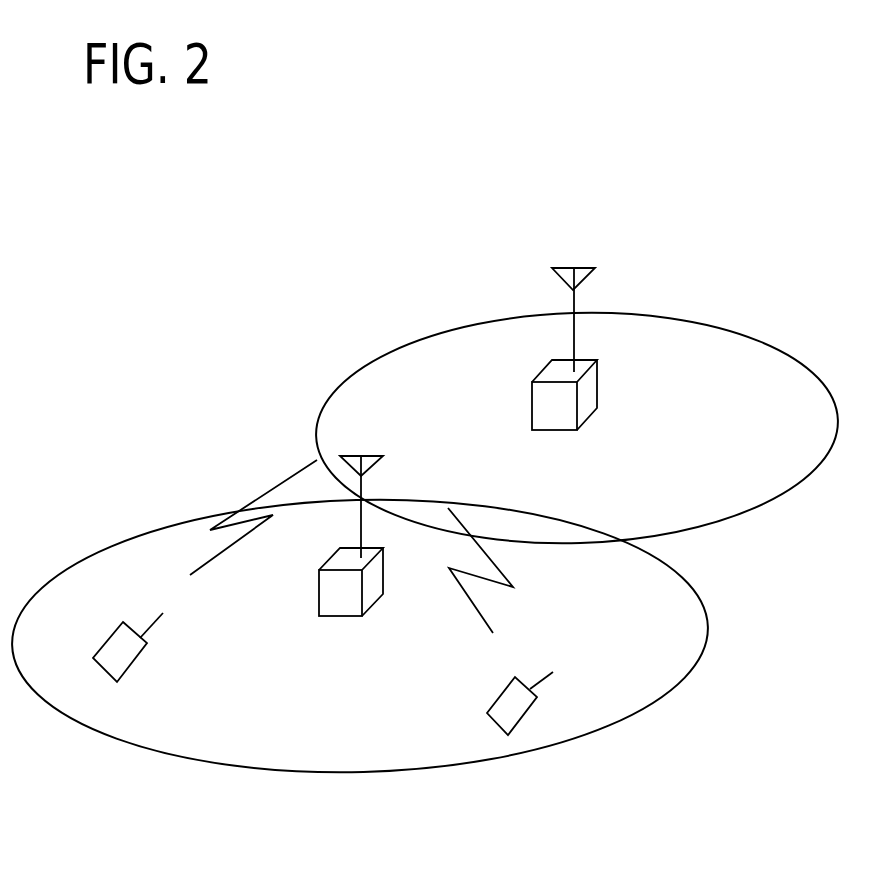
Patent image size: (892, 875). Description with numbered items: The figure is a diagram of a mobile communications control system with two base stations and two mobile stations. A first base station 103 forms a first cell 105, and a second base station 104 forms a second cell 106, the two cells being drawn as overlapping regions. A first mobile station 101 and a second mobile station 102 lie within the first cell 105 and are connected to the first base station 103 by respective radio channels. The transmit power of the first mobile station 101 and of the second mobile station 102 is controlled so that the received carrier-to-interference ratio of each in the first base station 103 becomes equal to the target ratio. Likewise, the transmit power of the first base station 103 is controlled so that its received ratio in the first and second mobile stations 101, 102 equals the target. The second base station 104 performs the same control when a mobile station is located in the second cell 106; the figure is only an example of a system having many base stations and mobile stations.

The first mobile station 101 is at (127, 657).
The second mobile station 102 is at (500, 715).
The first base station 103 is at (367, 593).
The second base station 104 is at (585, 402).
The first cell 105 is at (663, 677).
The second cell 106 is at (742, 498).